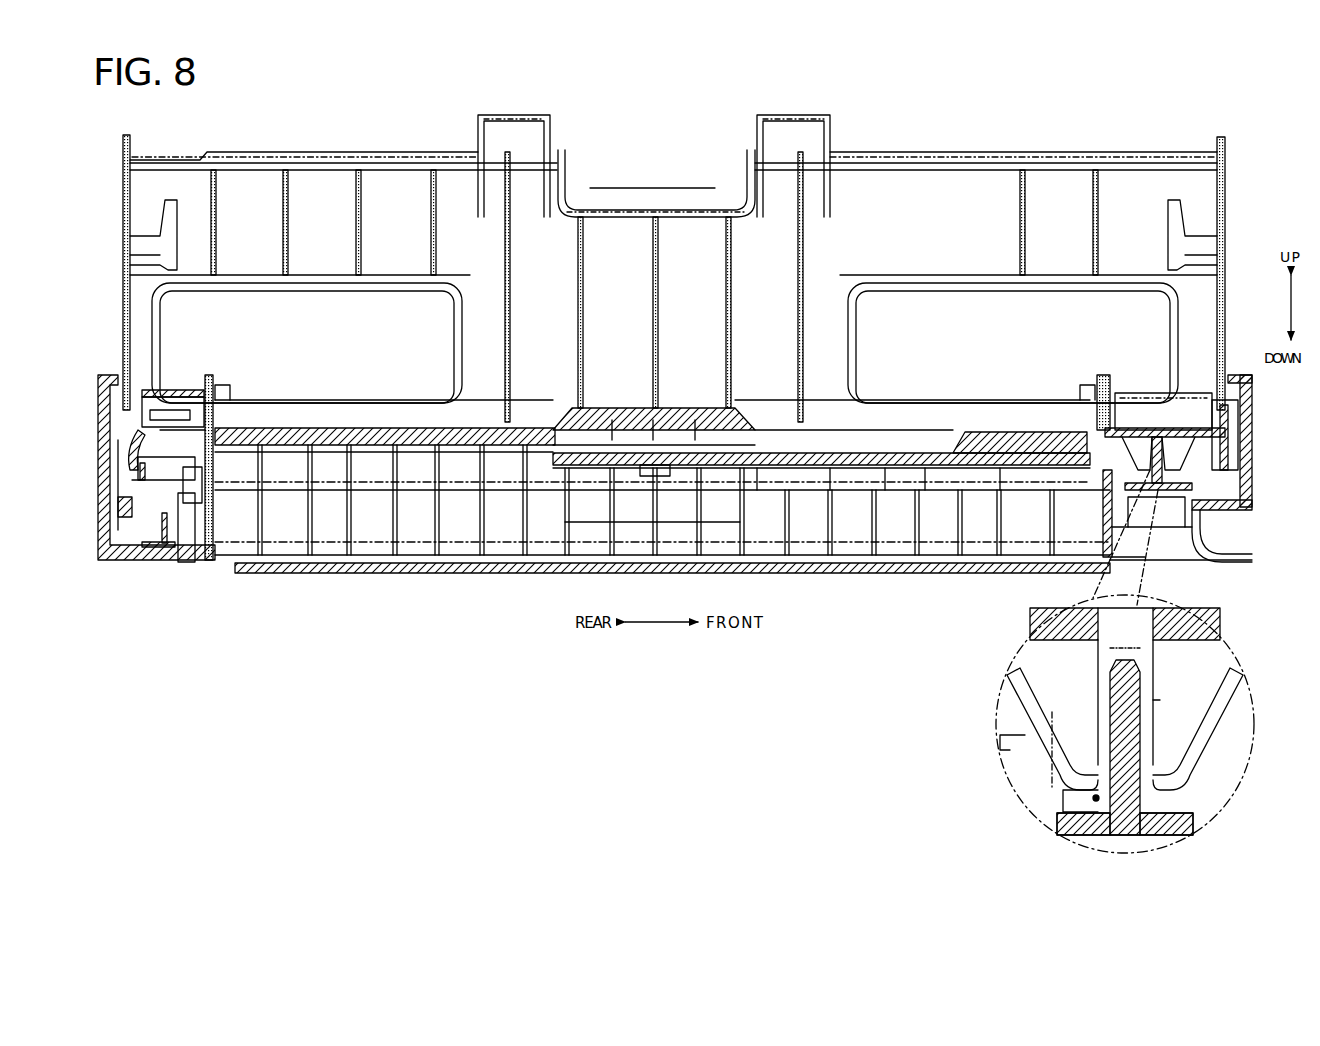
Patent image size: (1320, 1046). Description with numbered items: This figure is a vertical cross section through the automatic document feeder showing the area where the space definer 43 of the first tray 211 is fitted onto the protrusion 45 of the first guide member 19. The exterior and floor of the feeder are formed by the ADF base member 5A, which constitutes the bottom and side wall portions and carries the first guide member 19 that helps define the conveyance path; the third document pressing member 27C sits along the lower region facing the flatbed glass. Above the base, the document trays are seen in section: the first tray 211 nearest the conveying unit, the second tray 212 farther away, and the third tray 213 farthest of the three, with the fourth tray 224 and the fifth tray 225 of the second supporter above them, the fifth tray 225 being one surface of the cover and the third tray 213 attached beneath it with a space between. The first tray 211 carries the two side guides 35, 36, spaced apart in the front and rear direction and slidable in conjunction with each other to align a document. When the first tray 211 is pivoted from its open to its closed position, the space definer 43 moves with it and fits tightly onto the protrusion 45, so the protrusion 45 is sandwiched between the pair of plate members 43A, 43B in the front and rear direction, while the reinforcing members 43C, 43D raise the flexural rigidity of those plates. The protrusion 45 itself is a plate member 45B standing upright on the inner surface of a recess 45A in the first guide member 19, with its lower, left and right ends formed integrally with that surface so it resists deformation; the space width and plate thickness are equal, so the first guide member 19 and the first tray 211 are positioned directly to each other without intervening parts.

The side guide 36 is at (228, 385).
The third tray 213 is at (320, 338).
The second tray 212 is at (398, 420).
The fifth tray 225 is at (617, 255).
The side guide 35 is at (1088, 385).
The fourth tray 224 is at (417, 512).
The third document pressing member 27C is at (572, 565).
The ADF base member 5A is at (805, 565).
The first tray 211 is at (893, 473).
The space definer 43 is at (1168, 445).
The protrusion 45 is at (1168, 483).
The plate member 45B is at (1128, 690).
The recess 45A is at (1093, 798).
The first guide member 19 is at (1212, 507).
The plate member 43A is at (1153, 712).
The plate member 43B is at (1105, 712).
The reinforcing member 43C is at (1243, 674).
The reinforcing member 43D is at (1010, 674).